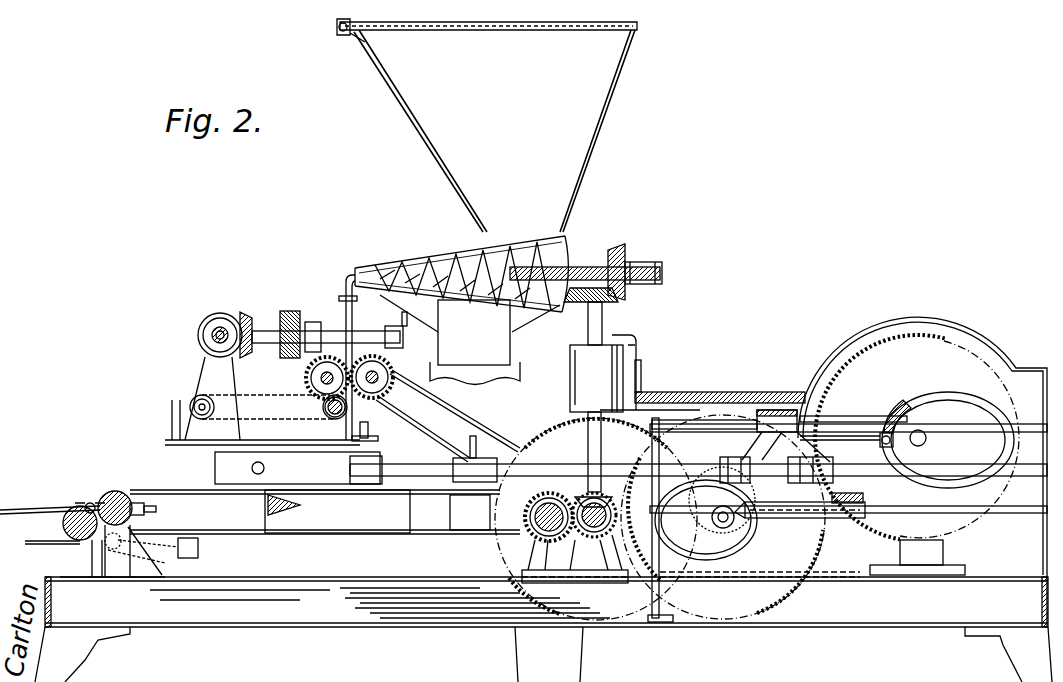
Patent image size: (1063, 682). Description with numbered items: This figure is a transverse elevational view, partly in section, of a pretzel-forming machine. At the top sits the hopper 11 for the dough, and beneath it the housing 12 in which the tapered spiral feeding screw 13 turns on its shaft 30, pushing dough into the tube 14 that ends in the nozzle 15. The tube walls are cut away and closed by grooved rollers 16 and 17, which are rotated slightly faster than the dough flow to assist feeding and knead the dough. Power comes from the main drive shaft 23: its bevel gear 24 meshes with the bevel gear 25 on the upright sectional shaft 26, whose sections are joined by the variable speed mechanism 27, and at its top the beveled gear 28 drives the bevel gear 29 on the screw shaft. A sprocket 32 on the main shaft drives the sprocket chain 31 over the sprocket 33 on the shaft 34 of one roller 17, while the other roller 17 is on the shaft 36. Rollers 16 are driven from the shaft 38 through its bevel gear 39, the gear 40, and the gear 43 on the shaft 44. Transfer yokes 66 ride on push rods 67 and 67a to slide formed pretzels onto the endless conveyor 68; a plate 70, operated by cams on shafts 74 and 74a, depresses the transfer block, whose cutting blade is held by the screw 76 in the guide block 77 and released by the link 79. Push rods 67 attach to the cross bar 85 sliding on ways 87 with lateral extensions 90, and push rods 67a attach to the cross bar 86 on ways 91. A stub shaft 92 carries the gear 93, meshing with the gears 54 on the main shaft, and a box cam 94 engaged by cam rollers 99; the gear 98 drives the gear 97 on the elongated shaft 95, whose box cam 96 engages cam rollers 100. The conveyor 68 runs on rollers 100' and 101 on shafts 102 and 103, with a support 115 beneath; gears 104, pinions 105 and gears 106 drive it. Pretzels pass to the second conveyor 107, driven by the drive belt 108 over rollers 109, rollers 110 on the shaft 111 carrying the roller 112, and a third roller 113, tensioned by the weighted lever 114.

The hopper 11 is at (596, 137).
The housing 12 is at (424, 252).
The spiral feeding screw 13 is at (545, 254).
The tube 14 is at (345, 279).
The nozzle 15 is at (363, 422).
The rollers 16 is at (347, 331).
The rollers 17 is at (394, 373).
The main drive shaft 23 is at (628, 548).
The bevel gear 24 is at (600, 496).
The bevel gear 25 is at (522, 505).
The upright sectional shaft 26 is at (602, 452).
The variable speed mechanism 27 is at (570, 372).
The beveled gear 28 is at (609, 330).
The bevel gear 29 is at (626, 258).
The shaft of the feed screw 30 is at (597, 266).
The sprocket chain 31 is at (474, 392).
The sprocket 32 is at (610, 530).
The sprocket 33 is at (420, 417).
The shaft 34 is at (442, 398).
The shaft 36 is at (324, 402).
The shaft 38 is at (219, 326).
The bevel gear 39 is at (207, 333).
The gear 40 is at (247, 312).
The gear 43 is at (292, 311).
The shaft 44 is at (390, 328).
The gears 54 is at (596, 628).
The yoke 66 is at (382, 466).
The push rod 67 is at (560, 460).
The push rod 67a is at (770, 478).
The endless traveling conveyor 68 is at (225, 534).
The plate 70 is at (280, 446).
The shaft 74 is at (204, 395).
The shaft 74a is at (322, 410).
The screw 76 is at (255, 394).
The guide block 77 is at (308, 378).
The link 79 is at (257, 467).
The cross bar 85 is at (768, 410).
The cross bar 86 is at (855, 488).
The ways 87 is at (1040, 390).
The lateral extensions 90 is at (848, 416).
The ways 91 is at (965, 505).
The stub shaft 92 is at (758, 536).
The gear 93 is at (740, 545).
The box cam 94 is at (730, 578).
The elongated shaft 95 is at (920, 446).
The box cam 96 is at (962, 398).
The gear 97 is at (912, 366).
The gear 98 is at (795, 588).
The cam rollers 99 is at (785, 514).
The cam rollers 100 is at (846, 443).
The roller 100' is at (315, 480).
The roller 101 is at (542, 552).
The shaft 102 is at (115, 491).
The shaft 103 is at (533, 544).
The gears 104 is at (570, 548).
The pinions 105 is at (570, 585).
The gears 106 is at (603, 548).
The second conveyor 107 is at (40, 508).
The drive belt 108 is at (88, 503).
The rollers 109 is at (156, 508).
The rollers 110 is at (63, 524).
The shaft 111 is at (62, 541).
The roller 112 is at (72, 550).
The third roller 113 is at (165, 563).
The weighted lever 114 is at (178, 540).
The support 115 is at (300, 505).